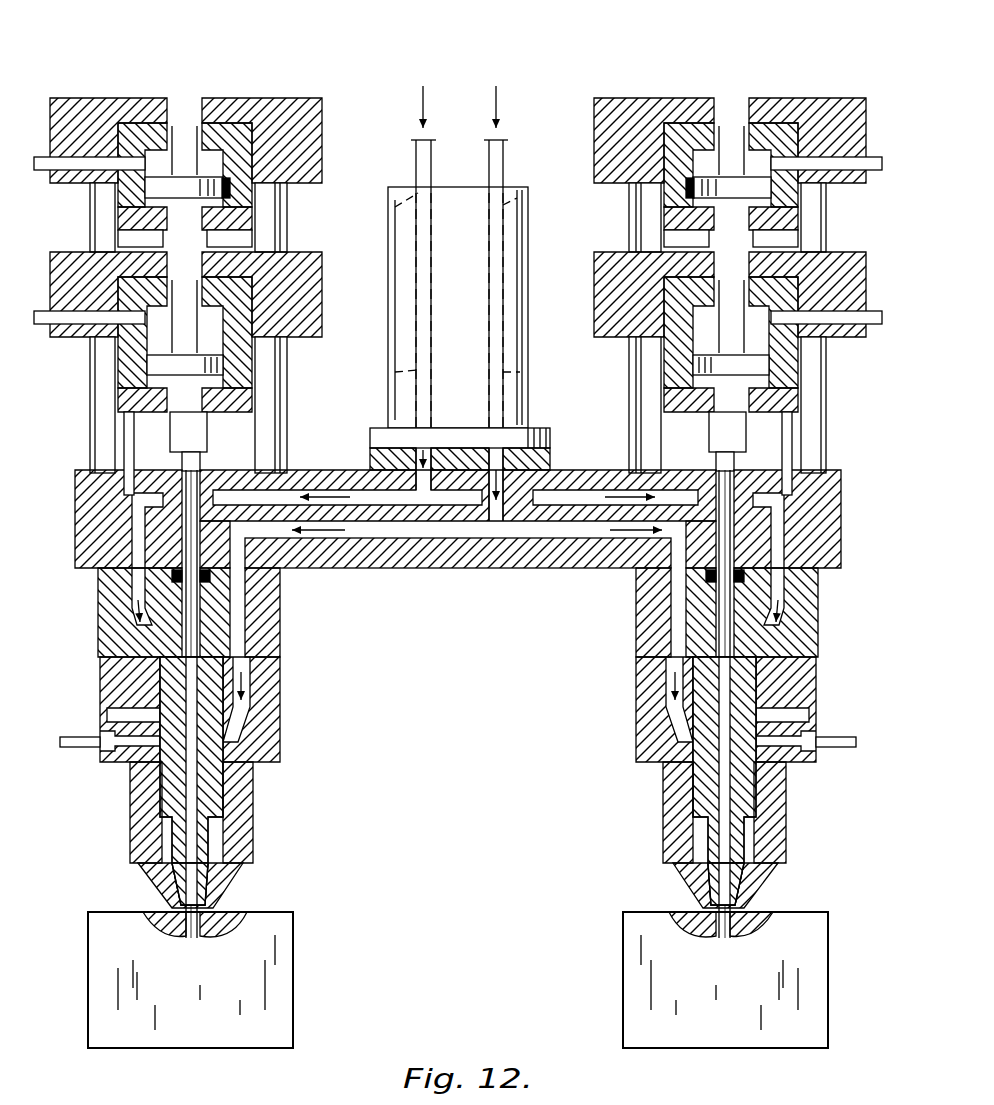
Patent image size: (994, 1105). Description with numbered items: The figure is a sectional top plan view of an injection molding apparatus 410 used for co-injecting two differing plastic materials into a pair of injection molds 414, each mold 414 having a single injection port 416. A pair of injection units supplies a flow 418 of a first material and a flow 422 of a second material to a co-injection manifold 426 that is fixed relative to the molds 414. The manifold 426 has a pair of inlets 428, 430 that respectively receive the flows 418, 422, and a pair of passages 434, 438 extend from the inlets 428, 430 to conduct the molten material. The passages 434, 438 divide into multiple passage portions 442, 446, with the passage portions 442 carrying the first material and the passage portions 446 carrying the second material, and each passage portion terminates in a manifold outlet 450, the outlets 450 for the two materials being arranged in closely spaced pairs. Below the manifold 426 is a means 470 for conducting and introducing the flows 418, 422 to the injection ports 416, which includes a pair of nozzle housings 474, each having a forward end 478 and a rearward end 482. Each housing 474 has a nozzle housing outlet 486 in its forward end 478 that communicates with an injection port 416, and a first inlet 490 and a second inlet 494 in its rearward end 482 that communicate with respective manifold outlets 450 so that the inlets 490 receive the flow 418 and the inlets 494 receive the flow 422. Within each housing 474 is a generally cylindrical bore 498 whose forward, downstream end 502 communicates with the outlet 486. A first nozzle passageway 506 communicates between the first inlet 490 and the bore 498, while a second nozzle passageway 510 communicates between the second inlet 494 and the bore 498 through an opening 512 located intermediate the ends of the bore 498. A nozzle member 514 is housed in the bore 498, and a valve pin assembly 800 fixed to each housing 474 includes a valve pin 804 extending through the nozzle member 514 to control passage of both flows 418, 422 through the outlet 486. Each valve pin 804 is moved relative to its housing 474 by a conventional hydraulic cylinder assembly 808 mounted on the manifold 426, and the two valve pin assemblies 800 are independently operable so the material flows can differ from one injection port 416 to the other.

The injection molding apparatus 410 is at (689, 60).
The injection mold 414 is at (183, 1035).
The injection port 416 is at (194, 925).
The flow of first material 418 is at (418, 145).
The flow of second material 422 is at (494, 152).
The co-injection manifold 426 is at (836, 503).
The inlet 428 is at (396, 208).
The inlet 430 is at (506, 206).
The passage 434 is at (396, 372).
The passage 438 is at (522, 372).
The passage portion 442 is at (342, 486).
The passage portion 446 is at (518, 540).
The manifold outlet 450 is at (135, 554).
The means for conducting and introducing flows 470 is at (298, 766).
The nozzle housing 474 is at (270, 652).
The forward end 478 is at (88, 900).
The rearward end 482 is at (72, 590).
The nozzle housing outlet 486 is at (230, 912).
The first inlet 490 is at (136, 590).
The second inlet 494 is at (246, 596).
The bore 498 is at (166, 806).
The downstream end of bore 502 is at (170, 868).
The first nozzle passageway 506 is at (142, 622).
The second nozzle passageway 510 is at (252, 680).
The opening 512 is at (252, 762).
The nozzle member 514 is at (176, 775).
The valve pin assembly 800 is at (294, 90).
The valve pin 804 is at (125, 470).
The hydraulic cylinder assembly 808 is at (82, 372).